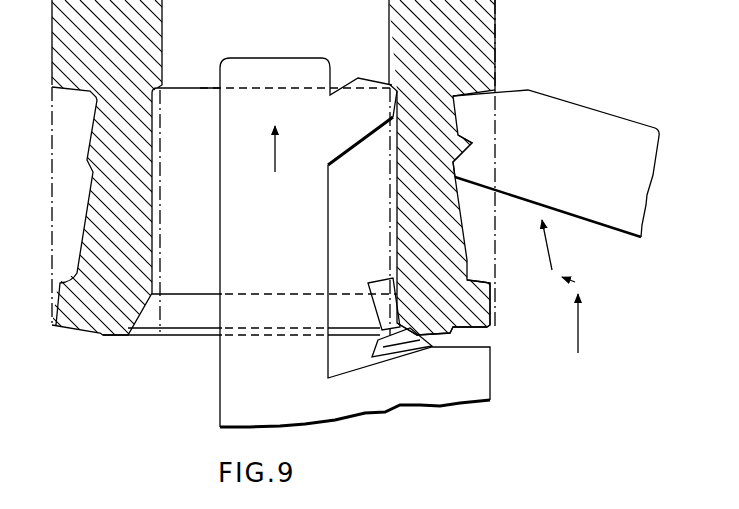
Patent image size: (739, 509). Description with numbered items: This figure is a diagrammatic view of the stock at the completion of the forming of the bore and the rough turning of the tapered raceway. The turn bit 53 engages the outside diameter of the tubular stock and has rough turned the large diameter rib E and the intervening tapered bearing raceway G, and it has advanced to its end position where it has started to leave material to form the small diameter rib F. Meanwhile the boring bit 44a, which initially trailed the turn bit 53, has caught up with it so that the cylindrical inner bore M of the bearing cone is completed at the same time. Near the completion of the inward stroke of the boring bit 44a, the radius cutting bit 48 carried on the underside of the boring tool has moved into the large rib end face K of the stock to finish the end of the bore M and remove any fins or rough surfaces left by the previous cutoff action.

The boring bit 44a is at (360, 78).
The turn bit 53 is at (577, 117).
The small diameter rib F is at (455, 163).
The inner bore M is at (397, 220).
The tapered bearing raceway G is at (467, 232).
The radius cutting bit 48 is at (378, 303).
The large diameter rib E is at (487, 310).
The large rib end face K is at (463, 332).